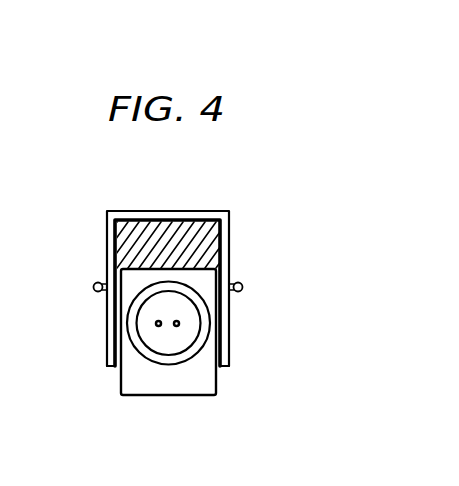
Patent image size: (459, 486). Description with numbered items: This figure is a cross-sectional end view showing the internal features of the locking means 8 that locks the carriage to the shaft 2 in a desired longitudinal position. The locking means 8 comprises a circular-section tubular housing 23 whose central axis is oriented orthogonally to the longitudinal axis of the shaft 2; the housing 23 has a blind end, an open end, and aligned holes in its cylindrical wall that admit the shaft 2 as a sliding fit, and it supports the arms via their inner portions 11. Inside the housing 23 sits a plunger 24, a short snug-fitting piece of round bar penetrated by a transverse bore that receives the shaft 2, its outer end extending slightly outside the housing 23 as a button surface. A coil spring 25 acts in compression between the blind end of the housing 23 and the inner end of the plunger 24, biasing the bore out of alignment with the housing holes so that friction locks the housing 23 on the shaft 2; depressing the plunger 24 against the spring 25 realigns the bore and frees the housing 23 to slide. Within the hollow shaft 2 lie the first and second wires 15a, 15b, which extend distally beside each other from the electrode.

The locking means 8 is at (284, 217).
The tubular housing 23 is at (107, 228).
The coil spring 25 is at (167, 230).
The inner portion 11 is at (95, 283).
The plunger 24 is at (198, 380).
The shaft 2 is at (161, 349).
The first wire 15a is at (155, 327).
The second wire 15b is at (180, 327).